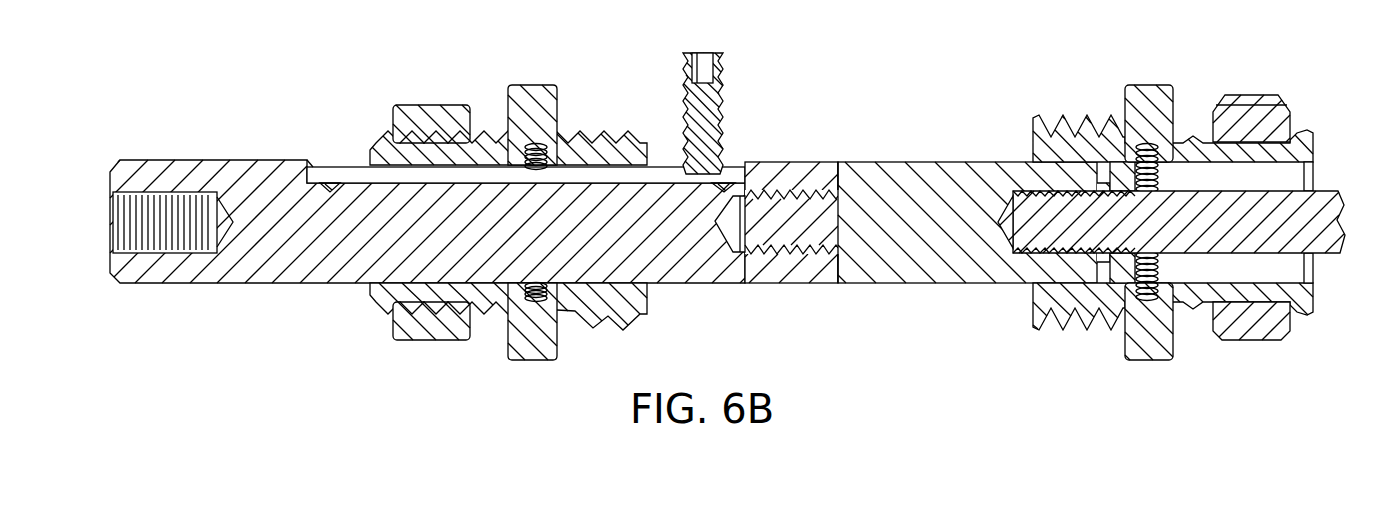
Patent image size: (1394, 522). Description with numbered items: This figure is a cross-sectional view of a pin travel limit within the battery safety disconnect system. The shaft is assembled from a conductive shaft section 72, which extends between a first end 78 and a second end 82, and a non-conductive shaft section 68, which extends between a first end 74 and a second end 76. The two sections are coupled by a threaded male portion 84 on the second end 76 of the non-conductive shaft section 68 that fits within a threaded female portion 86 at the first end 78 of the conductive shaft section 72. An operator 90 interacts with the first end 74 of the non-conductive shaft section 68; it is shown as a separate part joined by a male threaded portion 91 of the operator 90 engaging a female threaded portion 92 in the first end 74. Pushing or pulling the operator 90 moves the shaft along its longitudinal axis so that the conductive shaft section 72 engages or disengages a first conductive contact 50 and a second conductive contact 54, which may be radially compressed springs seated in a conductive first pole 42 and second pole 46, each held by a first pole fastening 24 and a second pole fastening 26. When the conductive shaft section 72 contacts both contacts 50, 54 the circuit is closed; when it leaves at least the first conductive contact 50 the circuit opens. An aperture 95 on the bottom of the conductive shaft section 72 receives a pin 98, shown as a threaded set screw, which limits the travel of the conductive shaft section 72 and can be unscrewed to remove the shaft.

The first pole fastening 24 is at (1250, 110).
The second pole fastening 26 is at (428, 115).
The first pole 42 is at (1148, 95).
The second pole 46 is at (508, 197).
The first conductive contact 50 is at (1145, 285).
The second conductive contact 54 is at (542, 145).
The non-conductive shaft section 68 is at (974, 263).
The conductive shaft section 72 is at (427, 203).
The first end 74 is at (1120, 265).
The second end 76 is at (845, 262).
The first end 78 is at (820, 165).
The second end 82 is at (133, 168).
The threaded male portion 84 is at (776, 275).
The threaded female portion 86 is at (772, 254).
The operator 90 is at (1187, 224).
The male threaded portion 91 is at (1070, 191).
The female threaded portion 92 is at (1073, 248).
The aperture 95 is at (346, 160).
The pin 98 is at (705, 62).